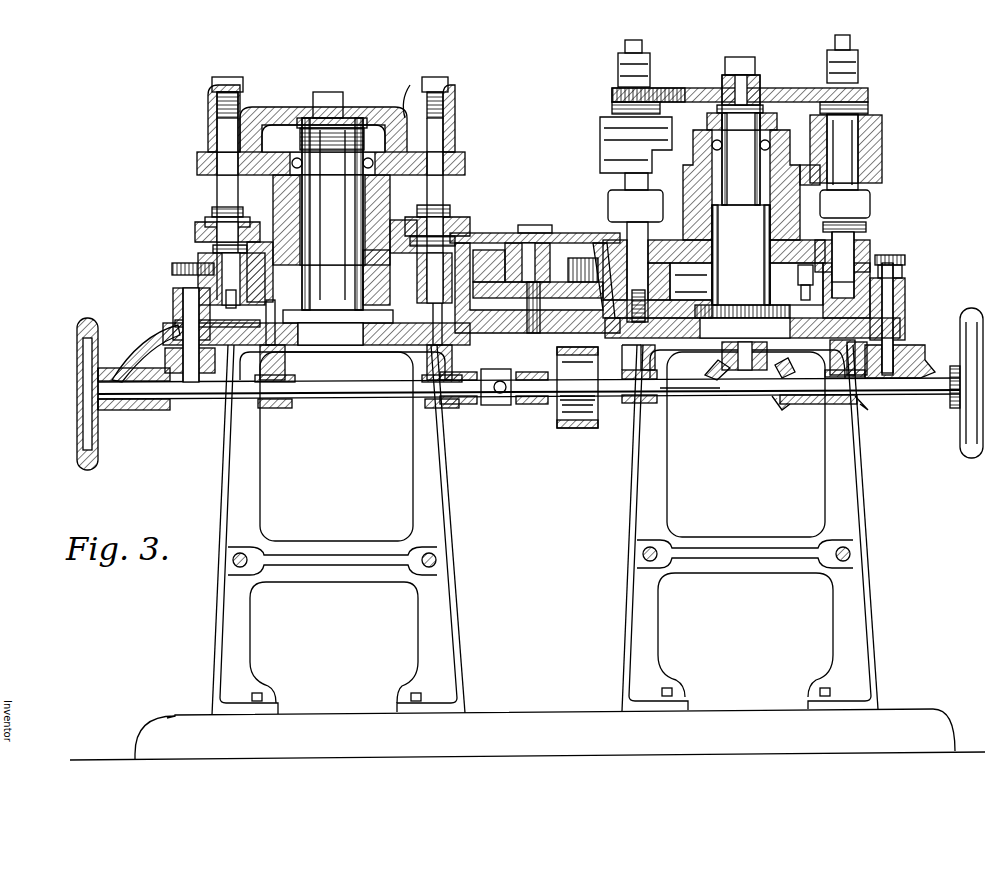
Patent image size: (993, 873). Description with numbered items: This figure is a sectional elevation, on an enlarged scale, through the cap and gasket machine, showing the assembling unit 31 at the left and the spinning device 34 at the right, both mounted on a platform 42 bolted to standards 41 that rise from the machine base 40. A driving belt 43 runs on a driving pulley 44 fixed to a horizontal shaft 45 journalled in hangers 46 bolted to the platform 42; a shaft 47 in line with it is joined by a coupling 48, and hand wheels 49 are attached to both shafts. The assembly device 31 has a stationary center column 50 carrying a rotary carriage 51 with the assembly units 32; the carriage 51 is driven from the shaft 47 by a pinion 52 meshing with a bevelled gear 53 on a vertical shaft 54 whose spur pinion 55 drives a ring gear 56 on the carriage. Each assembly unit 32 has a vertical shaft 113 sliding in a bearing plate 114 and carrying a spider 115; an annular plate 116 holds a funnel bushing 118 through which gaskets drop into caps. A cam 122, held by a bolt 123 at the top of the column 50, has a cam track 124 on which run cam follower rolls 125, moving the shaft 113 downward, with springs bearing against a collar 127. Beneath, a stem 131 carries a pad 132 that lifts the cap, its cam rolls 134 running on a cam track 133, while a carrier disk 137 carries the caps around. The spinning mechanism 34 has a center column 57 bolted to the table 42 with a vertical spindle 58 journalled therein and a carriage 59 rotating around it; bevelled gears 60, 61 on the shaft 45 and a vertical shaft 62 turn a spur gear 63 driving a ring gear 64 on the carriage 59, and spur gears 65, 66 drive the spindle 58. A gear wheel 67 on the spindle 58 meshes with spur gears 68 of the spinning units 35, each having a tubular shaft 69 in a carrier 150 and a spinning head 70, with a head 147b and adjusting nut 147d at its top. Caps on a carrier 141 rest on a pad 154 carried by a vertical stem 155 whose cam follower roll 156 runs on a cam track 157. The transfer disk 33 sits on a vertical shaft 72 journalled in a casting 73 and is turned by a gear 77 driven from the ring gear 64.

The assembling unit 31 is at (455, 108).
The assembly units 32 is at (207, 212).
The transfer disk 33 is at (585, 233).
The spinning device 34 is at (612, 95).
The spinning units 35 is at (882, 120).
The machine base 40 is at (568, 712).
The standards 41 is at (450, 475).
The platform 42 is at (390, 345).
The driving belt 43 is at (577, 428).
The driving pulley 44 is at (565, 405).
The horizontal shaft 45 is at (715, 394).
The hangers 46 is at (628, 403).
The shaft 47 is at (352, 399).
The coupling 48 is at (492, 397).
The hand wheels 49 is at (98, 455).
The center column 50 is at (302, 289).
The rotary carriage 51 is at (385, 186).
The pinion 52 is at (165, 410).
The bevelled gear 53 is at (215, 362).
The vertical shaft 54 is at (183, 300).
The spur pinion 55 is at (172, 268).
The ring gear 56 is at (475, 270).
The center column 57 is at (770, 272).
The vertical spindle 58 is at (745, 85).
The carriage 59 is at (690, 209).
The bevelled gear 60 is at (860, 405).
The bevelled gear 61 is at (910, 348).
The vertical shaft 62 is at (895, 296).
The spur gear 63 is at (905, 257).
The ring gear 64 is at (870, 248).
The spur gear 65 is at (786, 404).
The spur gear 66 is at (715, 375).
The gear wheel 67 is at (680, 88).
The spur gears 68 is at (612, 96).
The vertical tubular shaft 69 is at (858, 150).
The spinning head 70 is at (630, 215).
The vertical shaft 72 is at (537, 318).
The casting 73 is at (500, 318).
The gear 77 is at (585, 298).
The vertical shaft 113 is at (217, 133).
The bearing plate 114 is at (465, 162).
The spider 115 is at (450, 220).
The annular plate 116 is at (195, 236).
The bushing 118 is at (252, 220).
The cam 122 is at (385, 106).
The bolt 123 is at (333, 92).
The cam track 124 is at (408, 100).
The cam follower rolls 125 is at (350, 133).
The collar 127 is at (212, 210).
The stem 131 is at (240, 283).
The pad 132 is at (213, 250).
The cam track 133 is at (398, 323).
The cam rolls 134 is at (236, 300).
The carrier disk 137 is at (378, 297).
The carrier 141 is at (691, 281).
The head 147b is at (858, 68).
The adjusting nut 147d is at (850, 42).
The carriers 150 is at (610, 143).
The pad 154 is at (866, 226).
The vertical stem 155 is at (805, 280).
The cam follower roll 156 is at (805, 296).
The cam track 157 is at (790, 312).